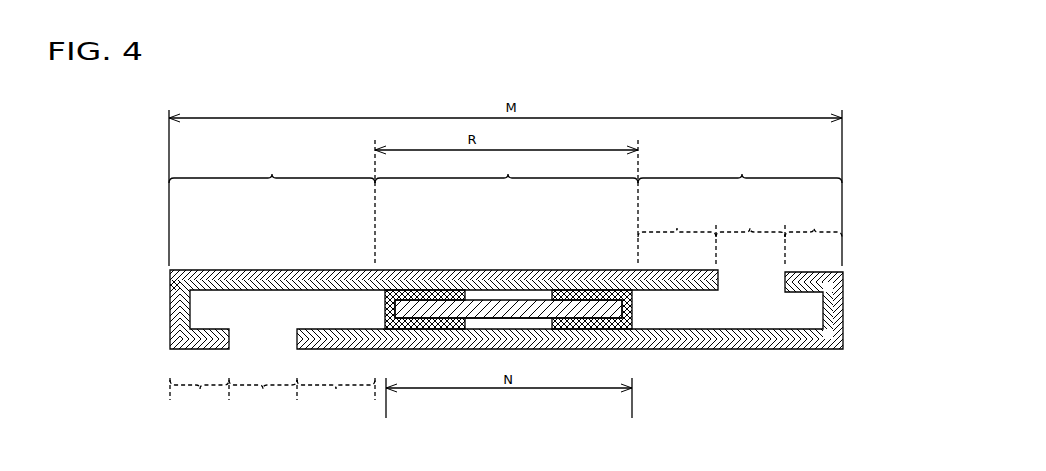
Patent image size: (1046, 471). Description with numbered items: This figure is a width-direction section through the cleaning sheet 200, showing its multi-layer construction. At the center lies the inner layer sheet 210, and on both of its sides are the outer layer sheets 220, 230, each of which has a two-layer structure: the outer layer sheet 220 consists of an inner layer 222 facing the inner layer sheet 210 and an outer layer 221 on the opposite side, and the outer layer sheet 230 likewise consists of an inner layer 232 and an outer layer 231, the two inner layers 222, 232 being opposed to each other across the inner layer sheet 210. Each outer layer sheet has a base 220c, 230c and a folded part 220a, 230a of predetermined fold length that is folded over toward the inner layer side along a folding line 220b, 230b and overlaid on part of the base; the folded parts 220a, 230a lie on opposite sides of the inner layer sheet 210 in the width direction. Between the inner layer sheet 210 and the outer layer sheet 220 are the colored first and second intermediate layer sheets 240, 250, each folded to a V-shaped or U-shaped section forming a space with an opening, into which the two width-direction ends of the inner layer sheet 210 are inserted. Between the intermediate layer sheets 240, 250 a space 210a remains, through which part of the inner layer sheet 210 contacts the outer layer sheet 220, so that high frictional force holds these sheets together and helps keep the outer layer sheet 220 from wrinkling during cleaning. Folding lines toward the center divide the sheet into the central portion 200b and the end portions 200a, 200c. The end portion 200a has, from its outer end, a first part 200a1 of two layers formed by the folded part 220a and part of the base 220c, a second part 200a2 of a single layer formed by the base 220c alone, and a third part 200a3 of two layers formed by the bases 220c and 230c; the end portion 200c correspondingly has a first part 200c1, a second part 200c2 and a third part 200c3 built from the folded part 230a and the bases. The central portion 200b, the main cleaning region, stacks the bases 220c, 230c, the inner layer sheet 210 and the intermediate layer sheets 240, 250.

The cleaning sheet 200 is at (454, 238).
The end portion 200a is at (725, 171).
The first part 200a1 is at (792, 224).
The second part 200a2 is at (728, 224).
The third part 200a3 is at (655, 224).
The central portion 200b is at (491, 171).
The end portion 200c is at (255, 171).
The first part 200c1 is at (179, 413).
The second part 200c2 is at (242, 413).
The third part 200c3 is at (312, 413).
The inner layer sheet 210 is at (501, 292).
The space 210a is at (518, 330).
The outer layer sheet 220 is at (786, 360).
The folded part 220a is at (808, 271).
The folding line 220b is at (845, 330).
The base 220c is at (670, 350).
The outer layer 221 is at (742, 350).
The inner layer 222 is at (760, 329).
The outer layer sheet 230 is at (272, 263).
The folded part 230a is at (200, 349).
The folding line 230b is at (170, 329).
The base 230c is at (530, 270).
The outer layer 231 is at (302, 270).
The inner layer 232 is at (258, 290).
The first intermediate layer sheet 240 is at (583, 290).
The second intermediate layer sheet 250 is at (398, 290).